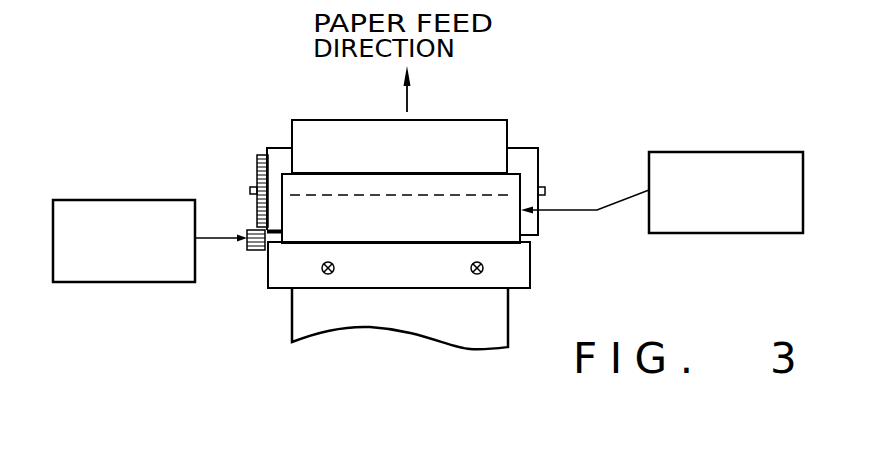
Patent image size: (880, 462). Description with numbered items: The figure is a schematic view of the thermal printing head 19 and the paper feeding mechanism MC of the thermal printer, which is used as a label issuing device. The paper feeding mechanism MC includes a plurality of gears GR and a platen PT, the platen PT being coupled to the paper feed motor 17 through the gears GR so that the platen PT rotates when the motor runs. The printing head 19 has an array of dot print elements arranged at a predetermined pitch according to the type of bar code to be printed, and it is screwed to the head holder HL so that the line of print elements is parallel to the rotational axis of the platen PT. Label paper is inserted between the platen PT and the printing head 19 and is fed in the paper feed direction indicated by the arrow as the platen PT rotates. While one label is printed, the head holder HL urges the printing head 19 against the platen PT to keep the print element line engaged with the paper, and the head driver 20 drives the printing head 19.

The paper feed motor 17 is at (72, 200).
The head driver 20 is at (788, 152).
The thermal printing head 19 is at (523, 237).
The paper feeding mechanism MC is at (251, 145).
The gears GR is at (253, 229).
The platen PT is at (524, 150).
The head holder HL is at (531, 278).